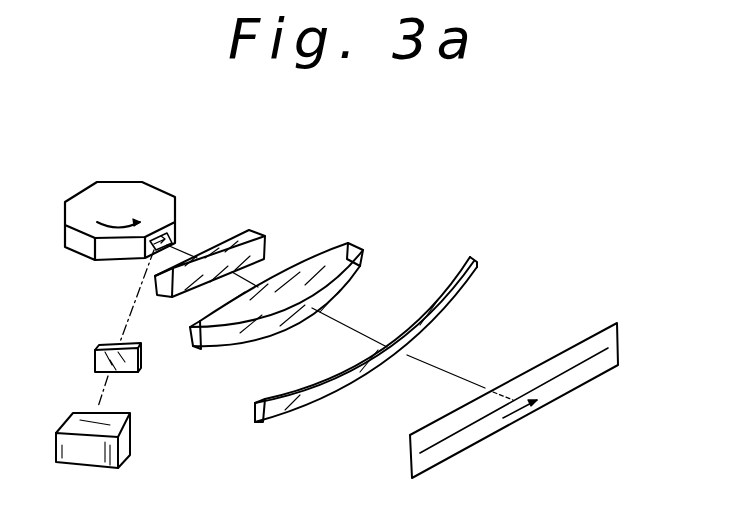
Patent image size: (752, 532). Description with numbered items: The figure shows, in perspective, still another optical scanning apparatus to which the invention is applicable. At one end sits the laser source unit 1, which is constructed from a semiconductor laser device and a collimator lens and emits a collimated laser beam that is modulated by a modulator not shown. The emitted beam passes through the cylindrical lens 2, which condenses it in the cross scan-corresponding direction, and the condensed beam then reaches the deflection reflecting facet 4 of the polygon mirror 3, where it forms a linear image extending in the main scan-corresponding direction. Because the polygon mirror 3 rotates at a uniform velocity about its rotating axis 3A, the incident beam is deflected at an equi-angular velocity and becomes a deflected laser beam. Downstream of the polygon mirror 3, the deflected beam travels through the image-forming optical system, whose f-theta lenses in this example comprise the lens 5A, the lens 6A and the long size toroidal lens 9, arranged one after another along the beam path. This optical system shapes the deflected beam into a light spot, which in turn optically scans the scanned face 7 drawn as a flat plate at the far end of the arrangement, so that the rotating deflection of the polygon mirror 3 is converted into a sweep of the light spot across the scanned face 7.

The laser source unit 1 is at (66, 430).
The cylindrical lens 2 is at (104, 348).
The polygon mirror 3 is at (82, 203).
The rotating axis 3A is at (120, 208).
The deflection reflecting facet 4 is at (176, 226).
The lens 5A is at (258, 228).
The lens 6A is at (350, 243).
The scanned face 7 is at (568, 343).
The long size toroidal lens 9 is at (477, 263).